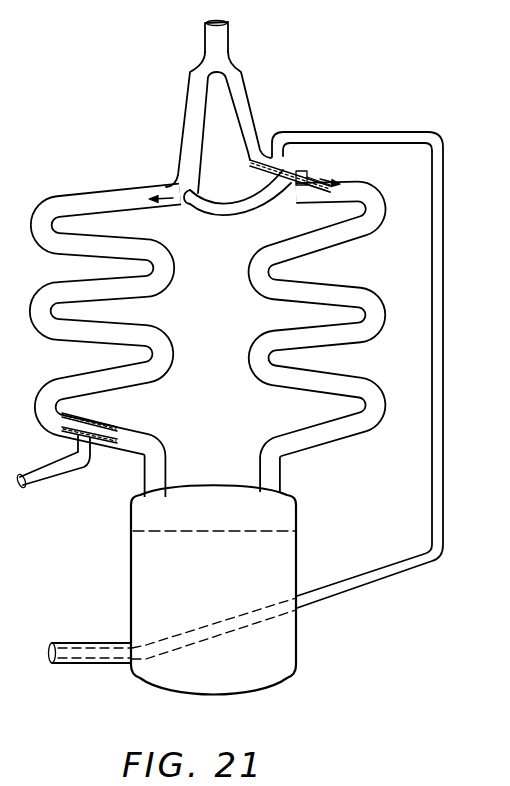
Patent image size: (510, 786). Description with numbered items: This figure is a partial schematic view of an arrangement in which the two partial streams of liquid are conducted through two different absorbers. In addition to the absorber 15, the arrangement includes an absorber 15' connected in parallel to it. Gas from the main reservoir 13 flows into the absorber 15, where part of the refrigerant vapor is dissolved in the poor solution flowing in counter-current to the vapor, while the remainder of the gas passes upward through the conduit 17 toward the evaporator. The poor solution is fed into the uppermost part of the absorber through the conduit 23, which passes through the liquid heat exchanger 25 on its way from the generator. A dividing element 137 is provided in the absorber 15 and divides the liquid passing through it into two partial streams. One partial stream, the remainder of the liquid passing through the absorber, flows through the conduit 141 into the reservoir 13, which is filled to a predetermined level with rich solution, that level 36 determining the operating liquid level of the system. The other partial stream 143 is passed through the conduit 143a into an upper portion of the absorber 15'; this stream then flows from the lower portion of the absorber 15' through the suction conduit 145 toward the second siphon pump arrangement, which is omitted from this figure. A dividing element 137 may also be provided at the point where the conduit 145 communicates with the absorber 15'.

The main reservoir 13 is at (298, 656).
The absorber 15 is at (333, 341).
The absorber 15' is at (90, 345).
The conduit 17 is at (222, 38).
The conduit 23 is at (445, 348).
The liquid heat exchanger 25 is at (75, 665).
The liquid level 36 is at (298, 522).
The divider element 137 is at (298, 186).
The conduit 141 is at (353, 181).
The partial stream 143 is at (183, 196).
The conduit 143a is at (231, 209).
The suction conduit 145 is at (55, 477).